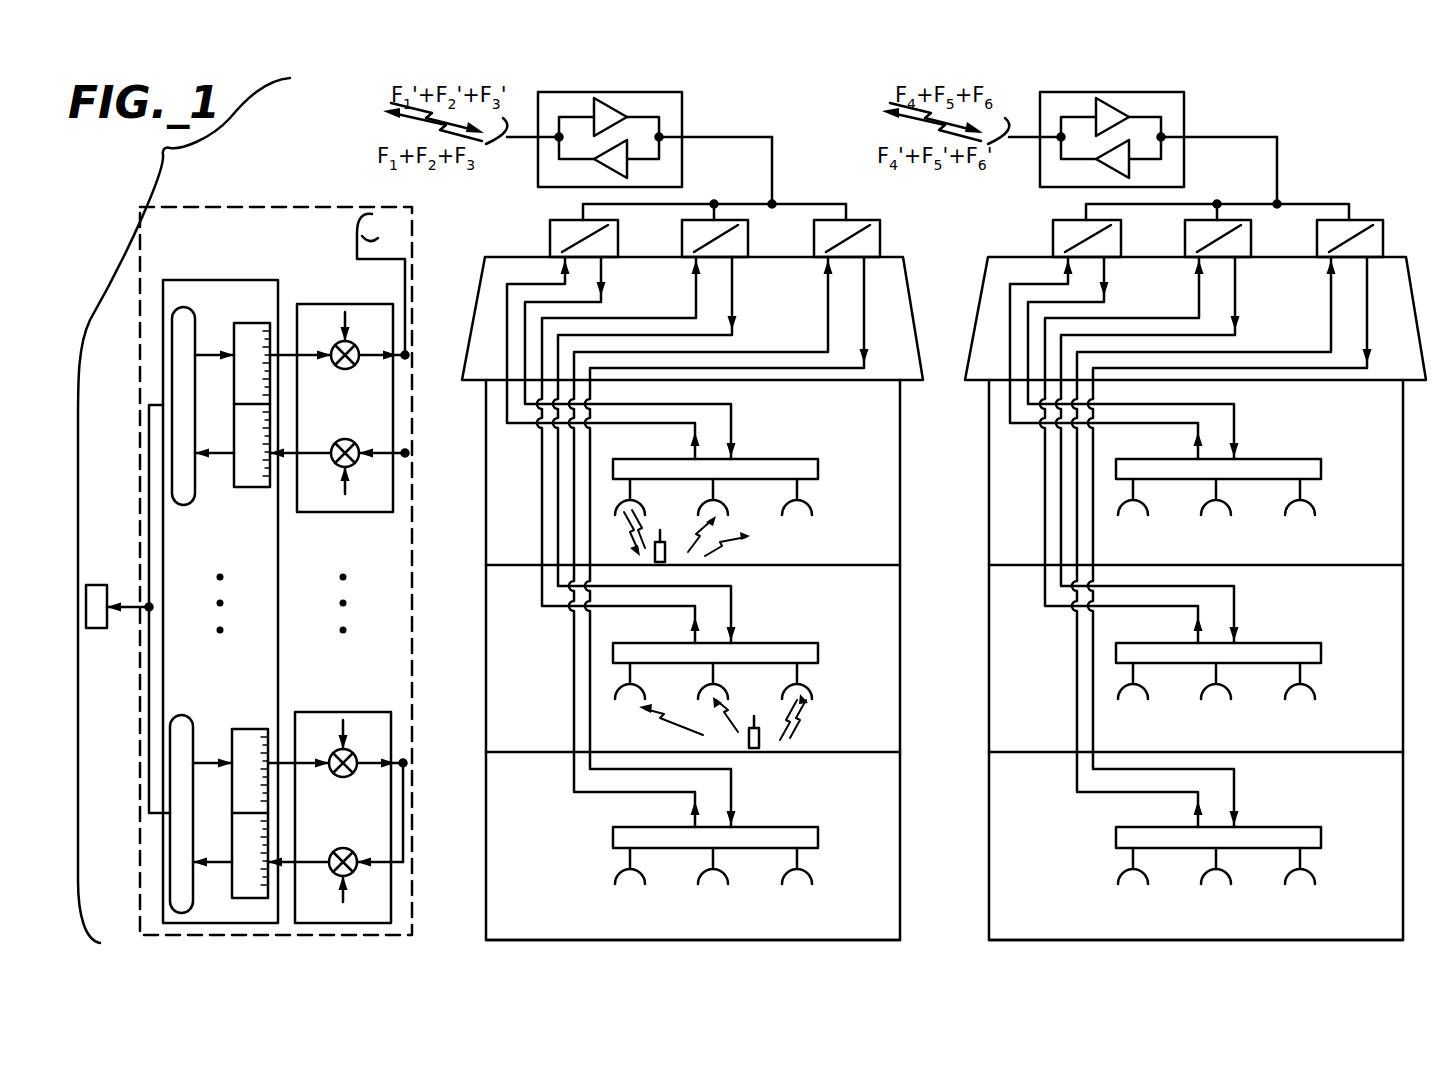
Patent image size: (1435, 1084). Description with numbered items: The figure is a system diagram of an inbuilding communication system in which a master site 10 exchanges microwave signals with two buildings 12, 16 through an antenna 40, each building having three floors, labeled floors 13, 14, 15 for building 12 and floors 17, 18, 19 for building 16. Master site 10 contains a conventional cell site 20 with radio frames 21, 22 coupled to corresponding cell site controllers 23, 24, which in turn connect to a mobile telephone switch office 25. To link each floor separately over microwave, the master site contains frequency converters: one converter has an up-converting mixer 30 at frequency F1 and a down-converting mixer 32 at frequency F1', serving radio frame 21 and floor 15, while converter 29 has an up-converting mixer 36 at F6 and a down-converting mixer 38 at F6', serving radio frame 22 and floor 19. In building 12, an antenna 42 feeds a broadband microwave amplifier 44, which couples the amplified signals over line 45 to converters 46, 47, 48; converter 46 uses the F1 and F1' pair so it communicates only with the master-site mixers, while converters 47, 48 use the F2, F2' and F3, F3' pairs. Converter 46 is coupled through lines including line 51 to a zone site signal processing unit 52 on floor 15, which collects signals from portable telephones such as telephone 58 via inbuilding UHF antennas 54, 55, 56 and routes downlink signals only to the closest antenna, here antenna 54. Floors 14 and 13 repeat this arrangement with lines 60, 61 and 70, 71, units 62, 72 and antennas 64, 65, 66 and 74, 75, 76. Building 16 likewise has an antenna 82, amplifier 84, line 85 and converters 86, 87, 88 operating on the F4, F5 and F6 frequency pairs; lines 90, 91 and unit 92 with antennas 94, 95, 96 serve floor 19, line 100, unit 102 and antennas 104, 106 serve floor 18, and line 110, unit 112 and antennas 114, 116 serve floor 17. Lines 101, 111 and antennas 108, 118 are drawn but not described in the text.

The master site 10 is at (413, 690).
The building 12 is at (912, 310).
The floor 13 is at (902, 865).
The floor 14 is at (902, 687).
The floor 15 is at (902, 512).
The building 16 is at (984, 278).
The floor 17 is at (988, 838).
The floor 18 is at (988, 658).
The floor 19 is at (988, 483).
The cell site 20 is at (278, 580).
The radio frame 21 is at (245, 323).
The radio frame 22 is at (255, 729).
The cell site controller 23 is at (184, 505).
The cell site controller 24 is at (185, 715).
The mobile telephone switch office 25 is at (98, 585).
The frequency converter 29 is at (350, 712).
The up-converting mixer 30 is at (350, 369).
The down-converting mixer 32 is at (350, 304).
The up-converting mixer 36 is at (348, 777).
The down-converting mixer 38 is at (336, 849).
The antenna 40 is at (356, 230).
The antenna 42 is at (500, 146).
The microwave amplifier 44 is at (682, 180).
The line 45 is at (772, 178).
The converter 46 is at (550, 246).
The converter 47 is at (682, 246).
The converter 48 is at (814, 246).
The line 51 is at (738, 428).
The zone site signal processing unit 52 is at (788, 459).
The inbuilding UHF antenna 54 is at (644, 507).
The inbuilding UHF antenna 55 is at (727, 507).
The inbuilding UHF antenna 56 is at (811, 507).
The portable telephone 58 is at (665, 546).
The line 60 is at (640, 608).
The line 61 is at (738, 606).
The zone site signal processing unit 62 is at (788, 643).
The inbuilding antenna 64 is at (644, 691).
The inbuilding antenna 65 is at (727, 691).
The inbuilding antenna 66 is at (811, 691).
The line 70 is at (625, 794).
The line 71 is at (738, 792).
The zone site signal processing unit 72 is at (788, 827).
The inbuilding antenna 74 is at (644, 876).
The inbuilding antenna 75 is at (727, 876).
The inbuilding antenna 76 is at (811, 876).
The antenna 82 is at (1002, 146).
The amplifier 84 is at (1184, 180).
The line 85 is at (1277, 178).
The converter 86 is at (1053, 246).
The converter 87 is at (1185, 246).
The converter 88 is at (1317, 246).
The line 90 is at (1148, 426).
The line 91 is at (1241, 428).
The zone site signal processing unit 92 is at (1294, 459).
The inbuilding antenna 94 is at (1147, 507).
The inbuilding antenna 95 is at (1230, 507).
The inbuilding antenna 96 is at (1314, 507).
The line 100 is at (1238, 606).
The second floor uplink cable 101 is at (1152, 608).
The zone site signal processing unit 102 is at (1291, 643).
The inbuilding antenna 104 is at (1147, 691).
The inbuilding antenna 106 is at (1230, 691).
The antenna 108 is at (1314, 691).
The line 110 is at (1146, 794).
The first floor downlink cable 111 is at (1238, 792).
The zone site signal processing unit 112 is at (1291, 827).
The inbuilding antenna 114 is at (1147, 876).
The inbuilding antenna 116 is at (1230, 876).
The antenna 118 is at (1314, 876).